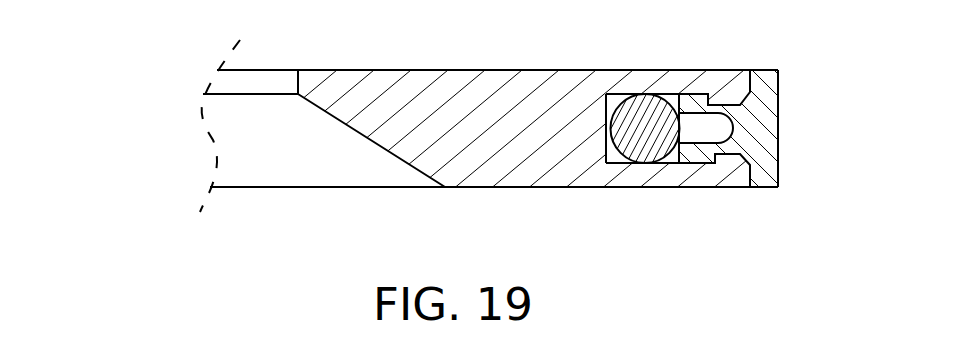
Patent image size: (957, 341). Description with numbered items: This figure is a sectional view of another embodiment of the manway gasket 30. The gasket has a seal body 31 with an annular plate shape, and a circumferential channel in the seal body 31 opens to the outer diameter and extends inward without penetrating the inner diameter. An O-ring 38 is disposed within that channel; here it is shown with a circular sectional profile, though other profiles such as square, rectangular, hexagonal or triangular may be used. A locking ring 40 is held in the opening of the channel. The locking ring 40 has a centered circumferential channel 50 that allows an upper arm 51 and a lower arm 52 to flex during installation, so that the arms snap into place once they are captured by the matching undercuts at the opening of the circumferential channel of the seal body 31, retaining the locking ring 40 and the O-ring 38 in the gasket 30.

The manway gasket 30 is at (160, 128).
The seal body 31 is at (479, 90).
The O-ring 38 is at (645, 125).
The locking ring 40 is at (778, 128).
The centered circumferential channel 50 is at (723, 128).
The upper arm 51 is at (707, 105).
The lower arm 52 is at (702, 155).